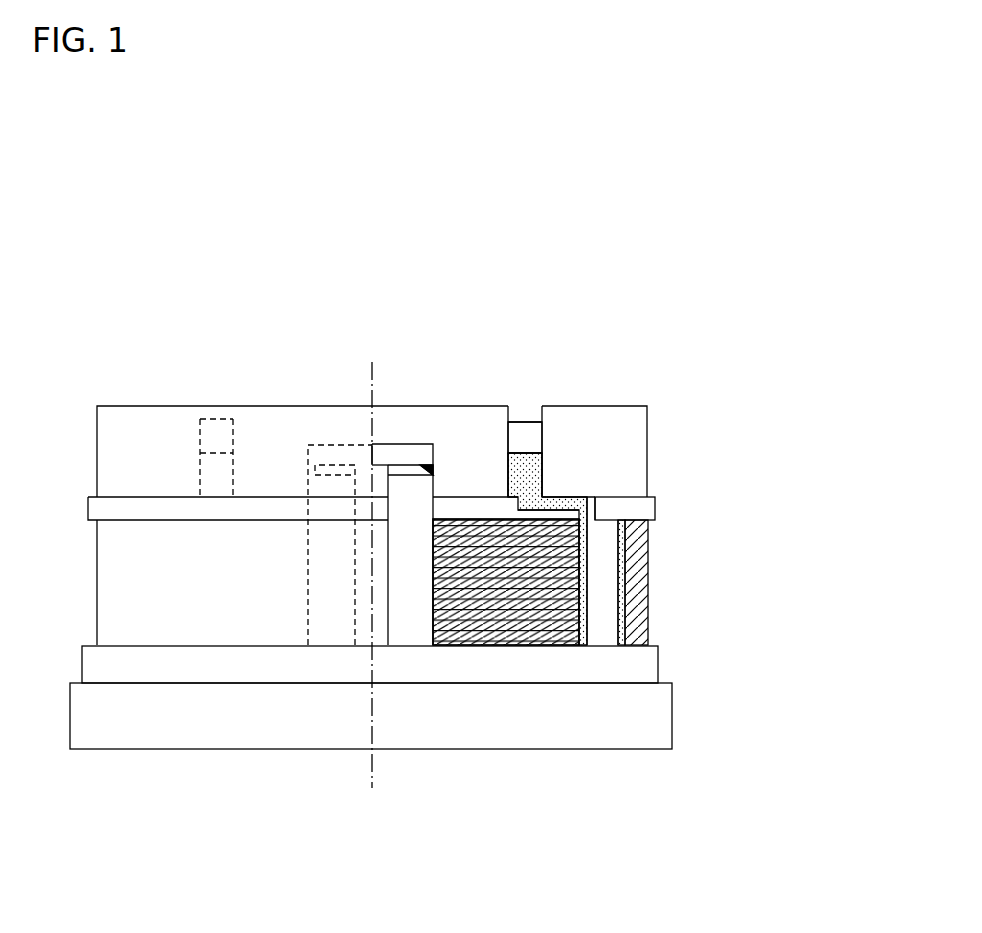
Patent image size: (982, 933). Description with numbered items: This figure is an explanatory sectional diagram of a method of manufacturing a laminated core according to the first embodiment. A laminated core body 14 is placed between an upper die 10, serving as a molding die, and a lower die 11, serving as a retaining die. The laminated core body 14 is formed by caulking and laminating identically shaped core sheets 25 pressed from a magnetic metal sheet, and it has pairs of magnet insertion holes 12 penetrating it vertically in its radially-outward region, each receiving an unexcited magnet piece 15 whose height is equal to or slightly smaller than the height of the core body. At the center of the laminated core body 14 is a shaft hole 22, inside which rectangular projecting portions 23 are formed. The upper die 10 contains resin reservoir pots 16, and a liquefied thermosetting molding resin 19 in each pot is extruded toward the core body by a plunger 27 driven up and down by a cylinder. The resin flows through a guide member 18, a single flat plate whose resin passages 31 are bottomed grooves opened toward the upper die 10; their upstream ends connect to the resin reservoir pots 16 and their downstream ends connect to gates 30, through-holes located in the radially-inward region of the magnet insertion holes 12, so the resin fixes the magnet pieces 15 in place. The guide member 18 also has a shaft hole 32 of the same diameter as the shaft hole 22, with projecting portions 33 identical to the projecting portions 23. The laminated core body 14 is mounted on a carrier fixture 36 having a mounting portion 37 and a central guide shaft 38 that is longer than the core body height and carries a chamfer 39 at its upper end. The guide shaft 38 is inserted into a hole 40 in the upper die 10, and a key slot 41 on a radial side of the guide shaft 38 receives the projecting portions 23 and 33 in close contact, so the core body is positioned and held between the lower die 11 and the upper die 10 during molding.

The upper die 10 is at (647, 457).
The lower die 11 is at (673, 710).
The magnet insertion hole 12 is at (647, 568).
The laminated core body 14 is at (661, 541).
The magnet piece 15 is at (655, 505).
The resin reservoir pot 16 is at (229, 482).
The guide member 18 is at (647, 487).
The molding resin 19 is at (568, 503).
The shaft hole 22 is at (432, 613).
The projecting portion 23 is at (362, 618).
The core sheet 25 is at (647, 635).
The plunger 27 is at (208, 437).
The gate 30 is at (627, 507).
The resin passage 31 is at (594, 503).
The shaft hole 32 is at (433, 507).
The projecting portion 33 is at (332, 495).
The carrier fixture 36 is at (671, 666).
The mounting portion 37 is at (573, 670).
The guide shaft 38 is at (398, 493).
The chamfer 39 is at (395, 466).
The hole 40 is at (398, 462).
The key slot 41 is at (382, 632).